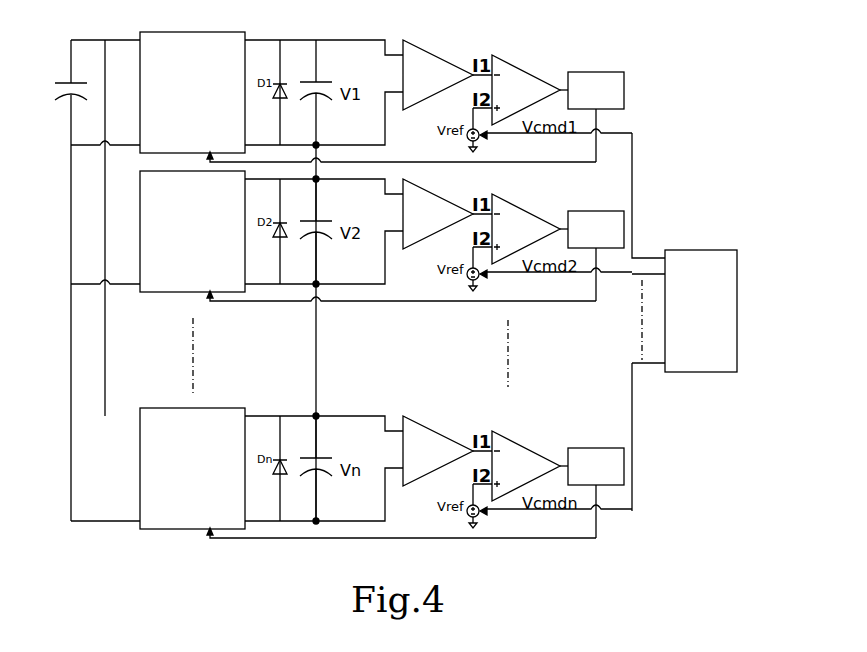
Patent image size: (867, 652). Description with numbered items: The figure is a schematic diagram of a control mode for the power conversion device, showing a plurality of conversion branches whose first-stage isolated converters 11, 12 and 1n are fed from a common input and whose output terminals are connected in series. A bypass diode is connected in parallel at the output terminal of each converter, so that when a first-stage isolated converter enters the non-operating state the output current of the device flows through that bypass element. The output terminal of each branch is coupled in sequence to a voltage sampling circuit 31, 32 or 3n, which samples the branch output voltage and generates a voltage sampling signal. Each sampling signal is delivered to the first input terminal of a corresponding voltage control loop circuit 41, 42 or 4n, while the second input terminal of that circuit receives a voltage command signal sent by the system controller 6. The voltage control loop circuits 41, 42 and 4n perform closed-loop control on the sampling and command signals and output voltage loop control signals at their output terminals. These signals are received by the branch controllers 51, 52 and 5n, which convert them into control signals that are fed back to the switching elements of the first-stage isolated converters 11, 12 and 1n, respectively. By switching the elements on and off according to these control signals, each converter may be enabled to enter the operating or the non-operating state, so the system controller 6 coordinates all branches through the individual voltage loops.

The first-stage isolated converter 11 is at (177, 38).
The first-stage isolated converter 12 is at (140, 231).
The first-stage isolated converter 1n is at (181, 456).
The voltage sampling circuit 31 is at (408, 53).
The voltage sampling circuit 32 is at (445, 208).
The voltage sampling circuit 3n is at (445, 439).
The voltage control loop circuit 41 is at (538, 82).
The voltage control loop circuit 42 is at (535, 218).
The voltage control loop circuit 4n is at (537, 455).
The branch controller 51 is at (612, 82).
The branch controller 52 is at (625, 240).
The branch controller 5n is at (624, 476).
The system controller 6 is at (695, 262).